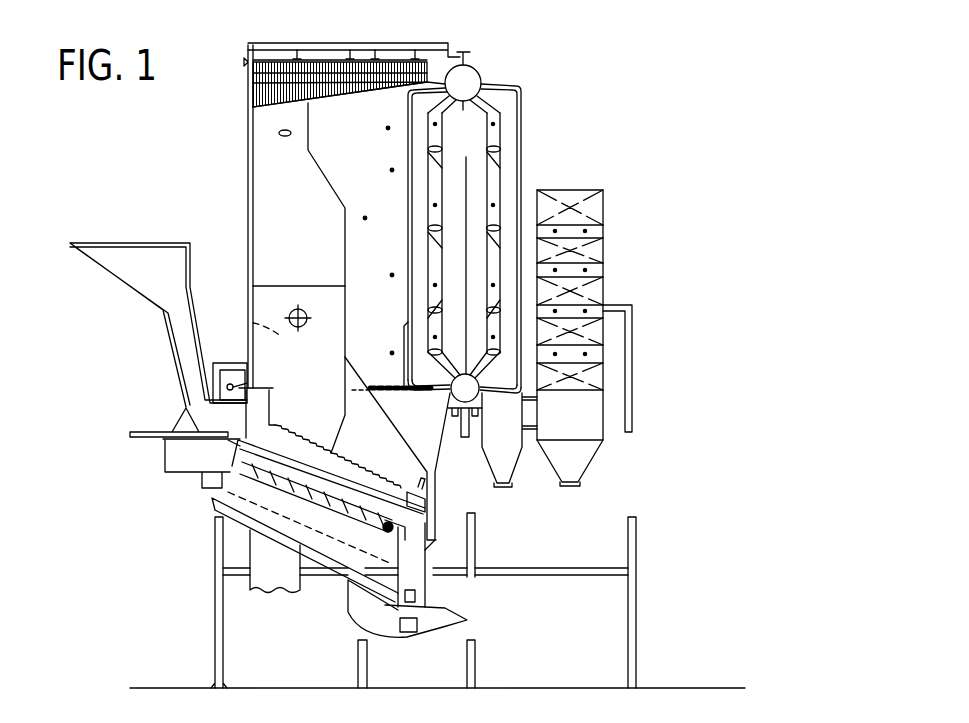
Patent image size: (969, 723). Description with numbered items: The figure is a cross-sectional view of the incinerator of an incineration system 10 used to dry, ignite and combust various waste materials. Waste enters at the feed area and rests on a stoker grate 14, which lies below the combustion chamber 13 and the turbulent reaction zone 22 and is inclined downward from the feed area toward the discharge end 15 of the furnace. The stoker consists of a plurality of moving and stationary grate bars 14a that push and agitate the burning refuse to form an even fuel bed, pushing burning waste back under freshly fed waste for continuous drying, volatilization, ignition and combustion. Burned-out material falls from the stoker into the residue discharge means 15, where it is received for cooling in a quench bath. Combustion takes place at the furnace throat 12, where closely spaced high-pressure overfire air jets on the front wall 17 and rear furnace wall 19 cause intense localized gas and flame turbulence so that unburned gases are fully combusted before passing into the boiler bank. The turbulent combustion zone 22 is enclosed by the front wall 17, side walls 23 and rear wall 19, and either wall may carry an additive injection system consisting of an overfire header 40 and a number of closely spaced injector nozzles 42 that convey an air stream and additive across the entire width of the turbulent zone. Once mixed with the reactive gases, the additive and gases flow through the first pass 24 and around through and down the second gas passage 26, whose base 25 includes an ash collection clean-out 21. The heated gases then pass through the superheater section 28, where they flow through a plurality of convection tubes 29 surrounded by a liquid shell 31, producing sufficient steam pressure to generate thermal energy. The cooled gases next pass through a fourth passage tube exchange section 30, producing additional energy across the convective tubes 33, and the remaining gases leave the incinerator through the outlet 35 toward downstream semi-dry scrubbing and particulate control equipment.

The incineration system 10 is at (152, 210).
The furnace throat 12 is at (185, 407).
The combustion chamber 13 is at (268, 302).
The stoker grate 14 is at (232, 466).
The grate bars 14a is at (245, 496).
The residue discharge means 15 is at (387, 537).
The front wall 17 is at (247, 233).
The rear wall 19 is at (344, 424).
The ash collection clean-out 21 is at (433, 475).
The turbulent reaction zone 22 is at (310, 380).
The side walls 23 is at (252, 323).
The first pass 24 is at (267, 163).
The base of second gas passage 25 is at (428, 438).
The second gas passage 26 is at (344, 115).
The superheater section 28 is at (503, 103).
The convection tubes 29 is at (497, 133).
The fourth passage tube exchange section 30 is at (597, 212).
The liquid shell 31 is at (512, 167).
The convective tubes 33 is at (585, 270).
The outlet 35 is at (576, 488).
The overfire header 40 is at (228, 385).
The injector nozzles 42 is at (250, 377).